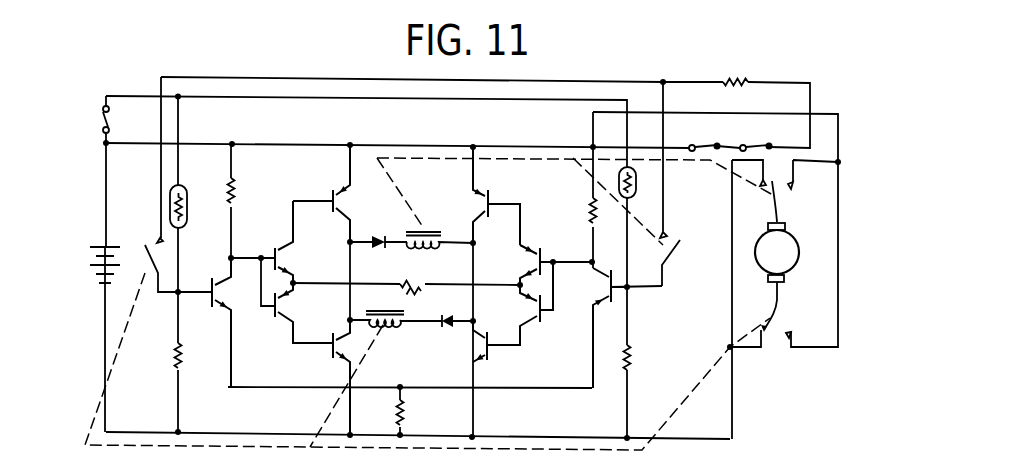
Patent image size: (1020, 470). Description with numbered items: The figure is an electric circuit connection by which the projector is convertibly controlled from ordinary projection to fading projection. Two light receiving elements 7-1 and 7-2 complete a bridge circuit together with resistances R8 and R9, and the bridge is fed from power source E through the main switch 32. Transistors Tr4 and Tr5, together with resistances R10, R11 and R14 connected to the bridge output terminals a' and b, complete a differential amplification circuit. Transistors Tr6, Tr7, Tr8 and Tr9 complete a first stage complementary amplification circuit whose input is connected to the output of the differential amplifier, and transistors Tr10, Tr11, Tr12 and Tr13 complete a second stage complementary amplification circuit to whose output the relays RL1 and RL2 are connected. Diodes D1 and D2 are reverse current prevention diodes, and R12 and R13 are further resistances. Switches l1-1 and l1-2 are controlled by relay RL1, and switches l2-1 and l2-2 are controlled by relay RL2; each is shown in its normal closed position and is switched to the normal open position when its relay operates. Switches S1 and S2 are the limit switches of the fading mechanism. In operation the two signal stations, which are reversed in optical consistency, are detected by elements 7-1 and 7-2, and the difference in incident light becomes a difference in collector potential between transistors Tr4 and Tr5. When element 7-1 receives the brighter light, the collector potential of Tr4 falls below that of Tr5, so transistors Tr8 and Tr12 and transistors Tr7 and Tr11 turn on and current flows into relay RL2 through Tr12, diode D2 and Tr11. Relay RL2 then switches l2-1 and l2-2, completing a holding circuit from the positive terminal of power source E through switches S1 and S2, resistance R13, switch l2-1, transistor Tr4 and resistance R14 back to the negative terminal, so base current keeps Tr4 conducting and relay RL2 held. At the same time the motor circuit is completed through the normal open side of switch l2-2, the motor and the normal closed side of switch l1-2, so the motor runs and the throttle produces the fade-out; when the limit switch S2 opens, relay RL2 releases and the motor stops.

The main switch 32 is at (128, 119).
The power source E is at (89, 246).
The switch l2-1 is at (147, 243).
The light receiving element 7-1 is at (195, 189).
The output terminal a' is at (158, 320).
The resistance R8 is at (200, 347).
The resistance R10 is at (238, 195).
The transistor Tr4 is at (216, 280).
The transistor Tr6 is at (286, 248).
The transistor Tr7 is at (290, 313).
The transistor Tr10 is at (347, 226).
The transistor Tr11 is at (347, 323).
The reverse current prevention diode D1 is at (378, 237).
The relay RL1 is at (439, 228).
The resistance R12 is at (420, 283).
The transistor Tr12 is at (481, 200).
The transistor Tr8 is at (523, 256).
The transistor Tr13 is at (484, 333).
The transistor Tr9 is at (505, 340).
The reverse current prevention diode D2 is at (436, 341).
The relay RL2 is at (400, 308).
The resistance R14 is at (405, 412).
The resistance R11 is at (590, 210).
The transistor Tr5 is at (606, 290).
The output terminal b is at (628, 289).
The resistance R9 is at (633, 352).
The light receiving element 7-2 is at (640, 185).
The switch l1-1 is at (683, 246).
The switch S1 is at (708, 145).
The limit switch S2 is at (761, 145).
The resistance R13 is at (739, 80).
The switch l1-2 is at (783, 184).
The switch l2-2 is at (768, 318).